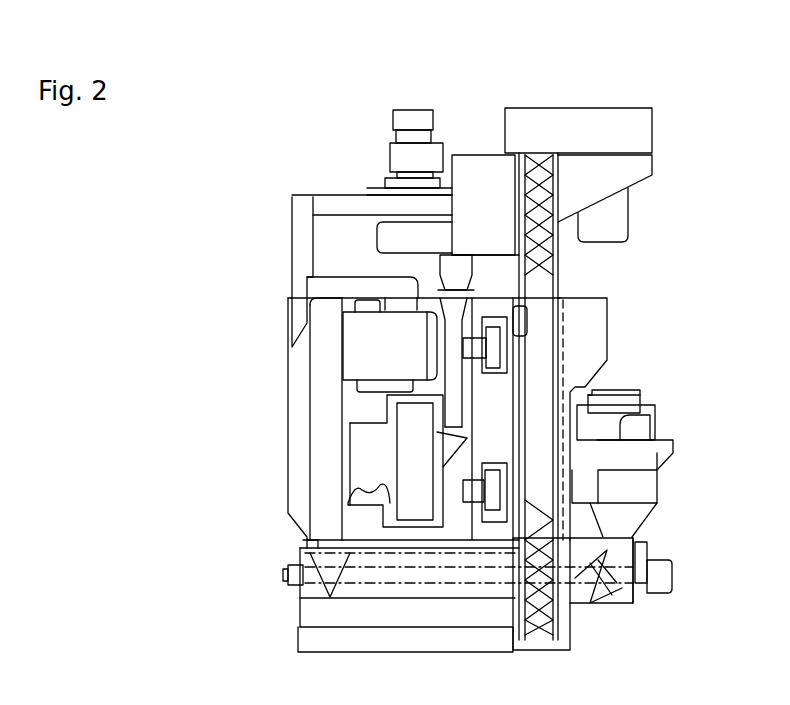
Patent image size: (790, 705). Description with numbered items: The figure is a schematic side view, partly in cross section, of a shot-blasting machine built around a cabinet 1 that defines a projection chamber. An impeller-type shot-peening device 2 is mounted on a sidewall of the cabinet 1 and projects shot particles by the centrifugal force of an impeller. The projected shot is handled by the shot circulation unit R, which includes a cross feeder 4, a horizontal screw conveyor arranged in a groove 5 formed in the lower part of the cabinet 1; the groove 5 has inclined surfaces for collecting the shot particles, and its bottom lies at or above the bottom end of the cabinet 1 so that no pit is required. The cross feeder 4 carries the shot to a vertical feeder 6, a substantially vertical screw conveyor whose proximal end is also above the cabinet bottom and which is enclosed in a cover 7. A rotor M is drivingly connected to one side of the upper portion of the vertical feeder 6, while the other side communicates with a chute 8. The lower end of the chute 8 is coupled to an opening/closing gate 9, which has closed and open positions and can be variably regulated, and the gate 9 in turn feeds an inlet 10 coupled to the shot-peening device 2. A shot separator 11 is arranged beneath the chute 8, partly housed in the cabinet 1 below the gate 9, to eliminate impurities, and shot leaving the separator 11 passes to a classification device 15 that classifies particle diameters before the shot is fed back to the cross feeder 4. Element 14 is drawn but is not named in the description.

The cabinet 1 is at (293, 313).
The shot-peening device 2 is at (412, 470).
The cross feeder 4 is at (607, 577).
The groove 5 is at (330, 600).
The vertical feeder 6 is at (550, 258).
The cover 7 is at (612, 102).
The chute 8 is at (474, 168).
The opening/closing gate 9 is at (440, 253).
The inlet 10 is at (455, 393).
The shot separator 11 is at (607, 308).
The knob 14 is at (402, 115).
The classification device 15 is at (638, 420).
The rotor M is at (628, 225).
The shot circulation unit R is at (567, 350).